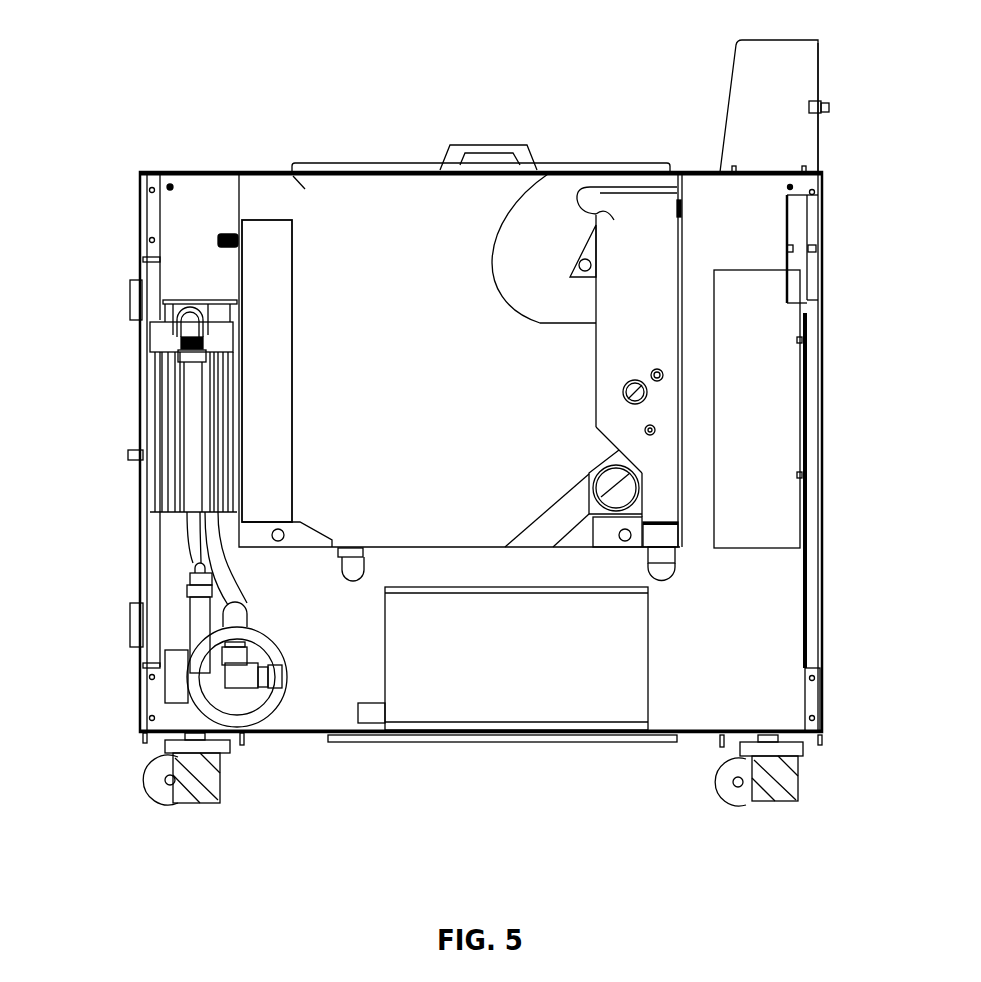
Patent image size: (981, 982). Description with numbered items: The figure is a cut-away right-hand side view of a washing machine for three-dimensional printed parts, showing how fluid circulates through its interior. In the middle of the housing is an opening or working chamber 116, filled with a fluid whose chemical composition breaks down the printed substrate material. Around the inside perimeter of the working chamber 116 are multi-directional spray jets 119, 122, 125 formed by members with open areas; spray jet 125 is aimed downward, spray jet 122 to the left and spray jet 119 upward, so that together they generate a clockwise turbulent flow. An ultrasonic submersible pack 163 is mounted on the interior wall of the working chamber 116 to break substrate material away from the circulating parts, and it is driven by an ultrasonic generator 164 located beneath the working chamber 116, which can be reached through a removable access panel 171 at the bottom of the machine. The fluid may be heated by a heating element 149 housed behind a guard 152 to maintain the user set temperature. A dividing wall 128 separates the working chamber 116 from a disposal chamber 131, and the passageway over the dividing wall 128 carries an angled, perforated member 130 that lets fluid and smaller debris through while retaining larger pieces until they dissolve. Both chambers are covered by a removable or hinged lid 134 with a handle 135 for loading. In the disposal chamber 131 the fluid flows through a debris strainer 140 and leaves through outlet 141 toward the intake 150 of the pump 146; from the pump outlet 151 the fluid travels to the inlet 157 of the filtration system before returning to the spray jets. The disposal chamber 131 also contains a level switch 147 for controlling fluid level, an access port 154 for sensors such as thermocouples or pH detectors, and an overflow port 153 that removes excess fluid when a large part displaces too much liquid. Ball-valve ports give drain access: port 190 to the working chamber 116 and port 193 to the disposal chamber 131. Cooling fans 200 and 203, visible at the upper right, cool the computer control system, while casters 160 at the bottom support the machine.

The working chamber 116 is at (441, 375).
The spray jet 119 is at (312, 537).
The spray jet 122 is at (585, 525).
The spray jet 125 is at (587, 247).
The dividing wall 128 is at (545, 174).
The perforated member 130 is at (574, 187).
The disposal chamber 131 is at (671, 258).
The lid 134 is at (345, 160).
The handle 135 is at (480, 145).
The debris strainer 140 is at (663, 532).
The outlet 141 is at (660, 557).
The pump 146 is at (237, 700).
The level switch 147 is at (648, 393).
The heating element 149 is at (616, 490).
The intake 150 is at (273, 680).
The pump outlet 151 is at (195, 568).
The guard 152 is at (503, 549).
The overflow port 153 is at (664, 374).
The access port 154 is at (656, 431).
The inlet 157 is at (187, 358).
The caster 160 is at (143, 775).
The ultrasonic submersible pack 163 is at (263, 275).
The ultrasonic generator 164 is at (632, 645).
The removable access panel 171 is at (652, 742).
The port 190 is at (365, 571).
The port 193 is at (673, 578).
The cooling fan 200 is at (820, 207).
The cooling fan 203 is at (820, 260).